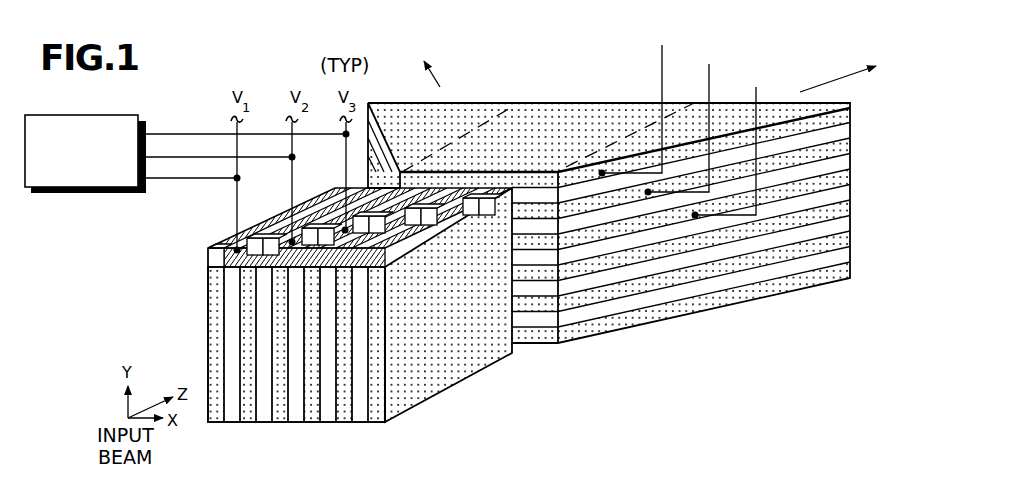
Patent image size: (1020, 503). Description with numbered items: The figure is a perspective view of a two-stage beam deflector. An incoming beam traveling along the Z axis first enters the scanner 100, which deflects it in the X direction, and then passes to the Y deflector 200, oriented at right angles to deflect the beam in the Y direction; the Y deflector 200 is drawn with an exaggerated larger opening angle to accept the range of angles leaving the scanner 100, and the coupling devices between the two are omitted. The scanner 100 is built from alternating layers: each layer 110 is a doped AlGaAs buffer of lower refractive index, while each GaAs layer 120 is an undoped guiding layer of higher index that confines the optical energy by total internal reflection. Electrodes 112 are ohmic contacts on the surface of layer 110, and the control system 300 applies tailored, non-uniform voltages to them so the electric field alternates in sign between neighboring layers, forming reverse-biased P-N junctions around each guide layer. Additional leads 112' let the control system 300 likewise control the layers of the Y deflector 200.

The scanner 100 is at (390, 327).
The layer 110 is at (217, 410).
The GaAs layer 120 is at (232, 412).
The electrodes 112 is at (338, 224).
The leads 112' is at (705, 113).
The Y deflector 200 is at (706, 335).
The control system 300 is at (70, 115).